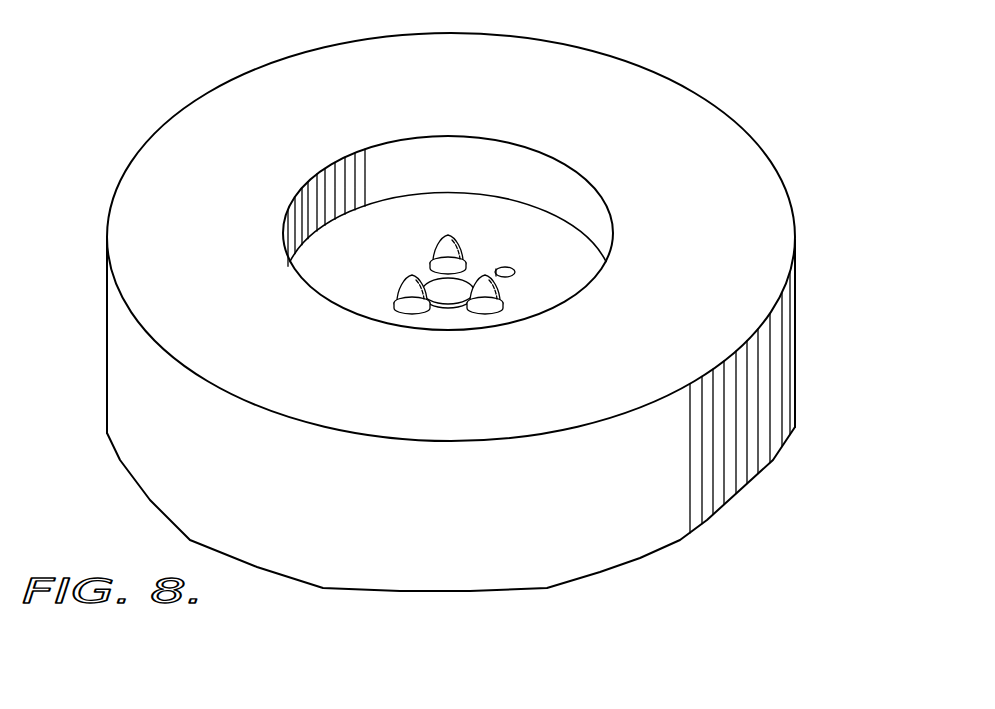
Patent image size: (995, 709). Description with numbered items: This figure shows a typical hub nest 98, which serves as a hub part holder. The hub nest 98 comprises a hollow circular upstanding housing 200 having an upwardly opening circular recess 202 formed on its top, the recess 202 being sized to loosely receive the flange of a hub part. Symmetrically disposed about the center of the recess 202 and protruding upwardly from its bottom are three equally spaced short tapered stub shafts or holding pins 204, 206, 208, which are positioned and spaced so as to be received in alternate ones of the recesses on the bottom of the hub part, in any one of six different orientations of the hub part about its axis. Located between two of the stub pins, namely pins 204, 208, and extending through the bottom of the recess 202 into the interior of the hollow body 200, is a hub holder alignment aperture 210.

The hub nest 98 is at (812, 140).
The hollow circular upstanding housing 200 is at (792, 361).
The circular recess 202 is at (563, 227).
The holding pin 204 is at (435, 245).
The holding pin 206 is at (405, 285).
The holding pin 208 is at (498, 292).
The hub holder alignment aperture 210 is at (515, 270).